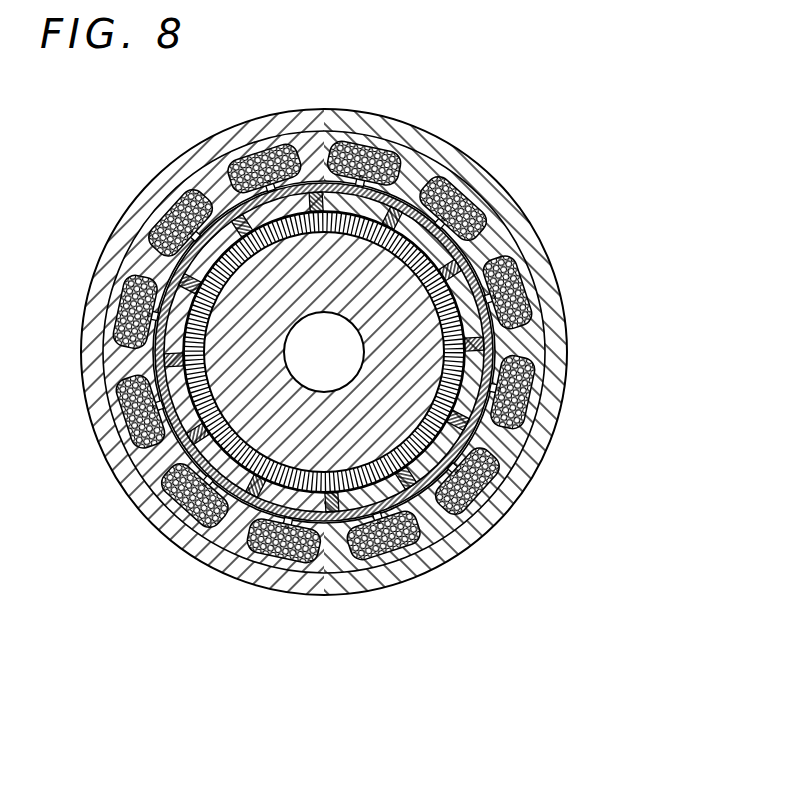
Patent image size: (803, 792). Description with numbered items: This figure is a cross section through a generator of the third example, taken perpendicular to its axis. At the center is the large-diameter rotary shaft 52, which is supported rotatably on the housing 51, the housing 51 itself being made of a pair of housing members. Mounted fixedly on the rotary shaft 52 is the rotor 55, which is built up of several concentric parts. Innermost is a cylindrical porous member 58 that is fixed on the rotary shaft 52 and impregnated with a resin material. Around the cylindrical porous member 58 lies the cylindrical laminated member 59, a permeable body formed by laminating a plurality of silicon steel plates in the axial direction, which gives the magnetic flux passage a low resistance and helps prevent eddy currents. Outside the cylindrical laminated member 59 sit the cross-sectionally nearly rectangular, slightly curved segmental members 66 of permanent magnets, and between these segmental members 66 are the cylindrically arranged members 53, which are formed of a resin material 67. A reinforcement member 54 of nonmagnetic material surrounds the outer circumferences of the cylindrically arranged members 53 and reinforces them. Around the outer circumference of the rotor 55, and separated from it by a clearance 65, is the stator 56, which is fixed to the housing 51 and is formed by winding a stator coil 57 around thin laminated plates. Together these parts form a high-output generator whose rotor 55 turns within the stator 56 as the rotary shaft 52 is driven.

The housing 51 is at (548, 273).
The rotary shaft 52 is at (341, 364).
The cylindrically arranged members 53 is at (505, 242).
The reinforcement member 54 is at (398, 160).
The rotor 55 is at (140, 477).
The stator 56 is at (543, 318).
The stator coil 57 is at (168, 200).
The cylindrical porous member 58 is at (430, 527).
The cylindrical laminated member 59 is at (474, 352).
The clearance 65 is at (452, 246).
The segmental members 66 is at (237, 197).
The resin material 67 is at (320, 205).